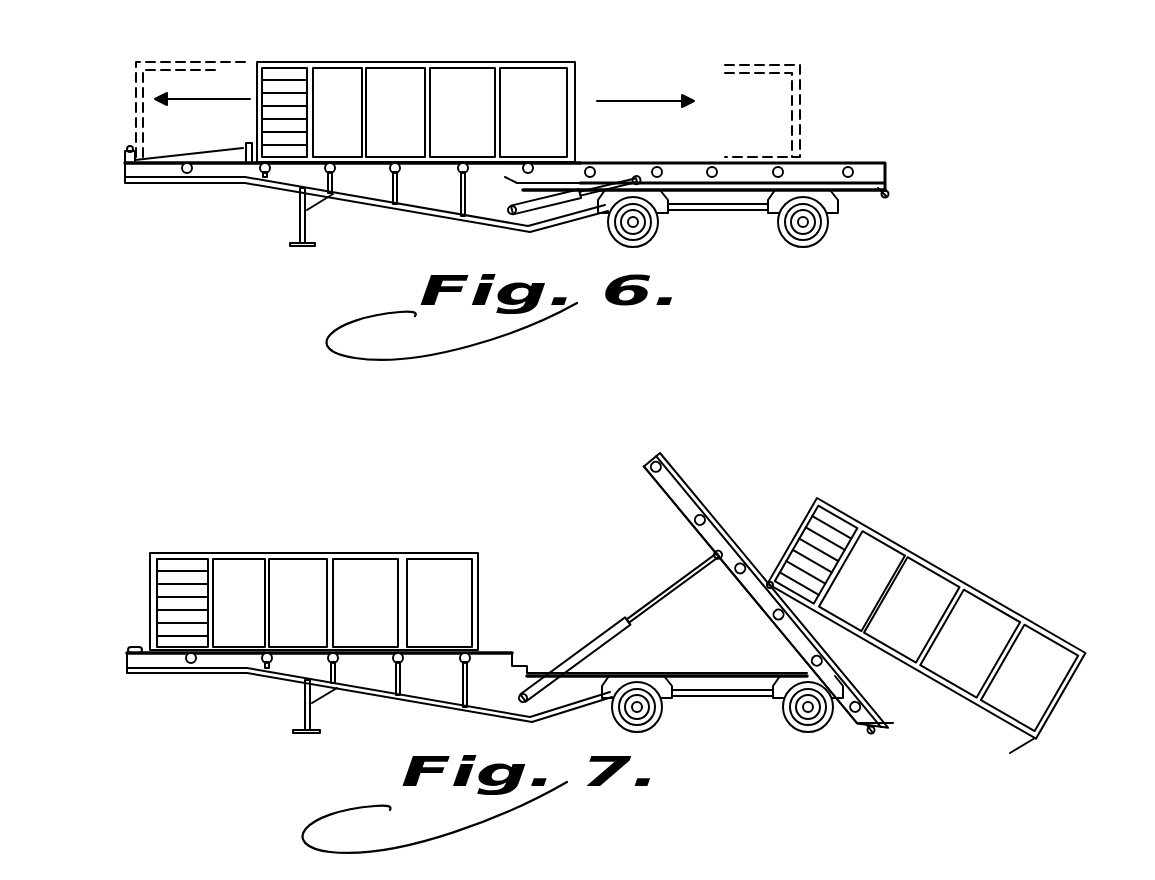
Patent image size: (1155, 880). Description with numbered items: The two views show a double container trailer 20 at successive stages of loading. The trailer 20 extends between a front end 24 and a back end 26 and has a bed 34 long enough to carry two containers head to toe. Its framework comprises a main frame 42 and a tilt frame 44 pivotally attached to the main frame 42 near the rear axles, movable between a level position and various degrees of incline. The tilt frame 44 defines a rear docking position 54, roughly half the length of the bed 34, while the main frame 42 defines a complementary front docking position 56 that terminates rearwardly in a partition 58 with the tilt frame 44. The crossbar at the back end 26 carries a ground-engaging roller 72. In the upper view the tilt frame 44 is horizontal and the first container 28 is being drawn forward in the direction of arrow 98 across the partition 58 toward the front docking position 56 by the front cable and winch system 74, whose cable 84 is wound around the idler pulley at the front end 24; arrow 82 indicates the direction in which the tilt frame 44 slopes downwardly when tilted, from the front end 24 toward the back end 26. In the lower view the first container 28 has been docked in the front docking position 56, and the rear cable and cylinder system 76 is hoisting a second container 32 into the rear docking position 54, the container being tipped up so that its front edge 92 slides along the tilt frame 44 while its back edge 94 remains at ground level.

In FIG. 6, the double container trailer 20 is at (845, 102).
In FIG. 7, the double container trailer 20 is at (125, 558).
In FIG. 6, the front end 24 is at (125, 170).
In FIG. 7, the front end 24 is at (127, 658).
In FIG. 6, the back end 26 is at (886, 170).
In FIG. 7, the back end 26 is at (893, 723).
In FIG. 6, the first container 28 is at (135, 76).
In FIG. 7, the first container 28 is at (337, 553).
In FIG. 7, the second container 32 is at (958, 584).
In FIG. 6, the bed 34 is at (621, 157).
In FIG. 6, the main frame 42 is at (375, 204).
In FIG. 7, the main frame 42 is at (427, 698).
In FIG. 6, the tilt frame 44 is at (843, 186).
In FIG. 7, the tilt frame 44 is at (672, 500).
In FIG. 6, the rear docking position 54 is at (695, 157).
In FIG. 6, the front docking position 56 is at (207, 172).
In FIG. 6, the partition 58 is at (505, 177).
In FIG. 7, the partition 58 is at (515, 661).
In FIG. 6, the ground-engaging roller 72 is at (887, 197).
In FIG. 7, the ground-engaging roller 72 is at (873, 734).
In FIG. 6, the front cable and winch system 74 is at (160, 156).
In FIG. 7, the rear cable and cylinder system 76 is at (735, 518).
In FIG. 6, the arrow 82 is at (661, 100).
In FIG. 6, the cable 84 is at (200, 152).
In FIG. 7, the front edge 92 is at (767, 587).
In FIG. 7, the back edge 94 is at (1036, 738).
In FIG. 6, the arrow 98 is at (219, 98).